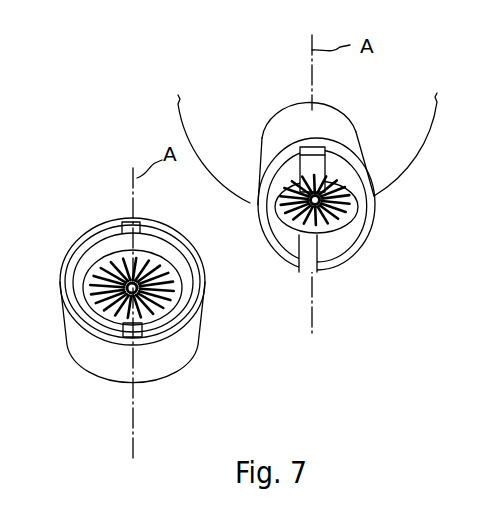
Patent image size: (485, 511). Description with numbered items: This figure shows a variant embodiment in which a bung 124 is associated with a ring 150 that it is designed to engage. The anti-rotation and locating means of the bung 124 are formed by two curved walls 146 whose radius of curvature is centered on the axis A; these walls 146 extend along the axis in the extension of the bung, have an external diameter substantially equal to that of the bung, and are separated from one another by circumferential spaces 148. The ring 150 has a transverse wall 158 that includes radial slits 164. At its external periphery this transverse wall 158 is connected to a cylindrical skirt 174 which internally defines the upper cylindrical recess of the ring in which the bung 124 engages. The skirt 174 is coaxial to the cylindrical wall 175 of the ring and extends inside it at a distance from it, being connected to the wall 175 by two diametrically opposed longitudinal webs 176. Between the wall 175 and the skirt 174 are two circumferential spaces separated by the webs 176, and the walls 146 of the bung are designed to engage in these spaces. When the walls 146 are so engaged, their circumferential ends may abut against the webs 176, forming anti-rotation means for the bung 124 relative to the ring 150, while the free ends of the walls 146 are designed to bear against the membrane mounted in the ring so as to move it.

The bung 124 is at (339, 213).
The curved walls 146 is at (258, 233).
The circumferential spaces 148 is at (308, 260).
The ring 150 is at (152, 301).
The transverse wall 158 is at (98, 274).
The radial slits 164 is at (112, 266).
The cylindrical skirt 174 is at (155, 238).
The cylindrical wall 175 is at (183, 294).
The longitudinal webs 176 is at (136, 230).